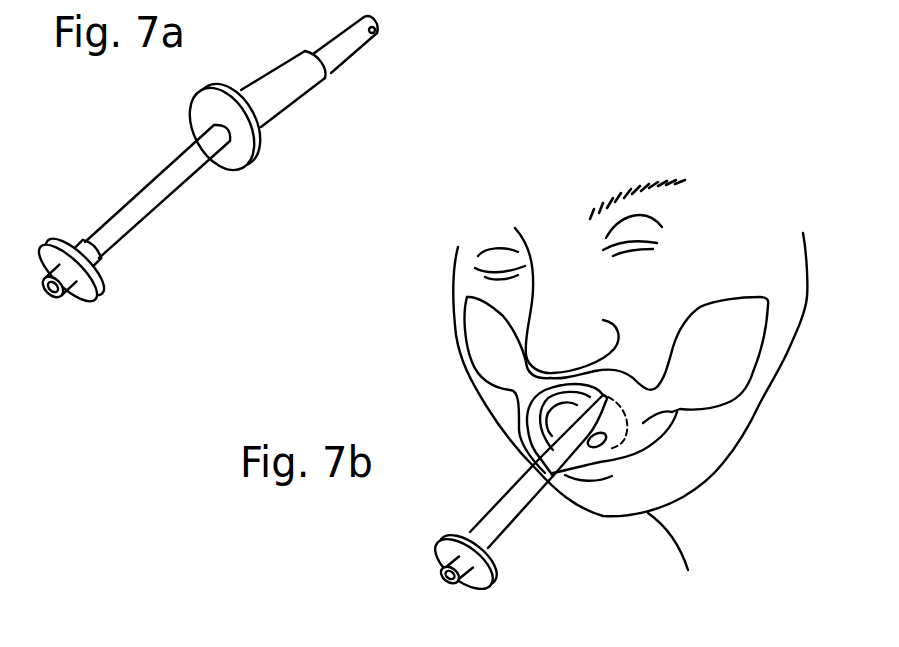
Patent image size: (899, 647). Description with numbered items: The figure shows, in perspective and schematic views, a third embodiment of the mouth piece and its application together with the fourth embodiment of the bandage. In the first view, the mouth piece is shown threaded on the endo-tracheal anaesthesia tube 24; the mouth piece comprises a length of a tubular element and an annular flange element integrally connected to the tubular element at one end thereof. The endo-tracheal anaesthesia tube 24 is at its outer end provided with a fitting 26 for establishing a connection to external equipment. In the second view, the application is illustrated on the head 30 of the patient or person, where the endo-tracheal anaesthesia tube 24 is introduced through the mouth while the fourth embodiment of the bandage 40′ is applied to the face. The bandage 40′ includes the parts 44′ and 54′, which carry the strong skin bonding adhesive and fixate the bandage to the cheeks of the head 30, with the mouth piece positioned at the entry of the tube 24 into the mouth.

In FIG. 7a, the endo-tracheal anaesthesia tube 24 is at (137, 197).
In FIG. 7b, the endo-tracheal anaesthesia tube 24 is at (508, 502).
In FIG. 7a, the fitting 26 is at (82, 290).
In FIG. 7b, the fitting 26 is at (490, 587).
In FIG. 7b, the head of the patient 30 is at (716, 184).
In FIG. 7b, the fourth embodiment of the bandage 40′ is at (615, 396).
In FIG. 7b, the part of the bandage 44′ is at (477, 348).
In FIG. 7b, the part of the bandage 54′ is at (743, 363).